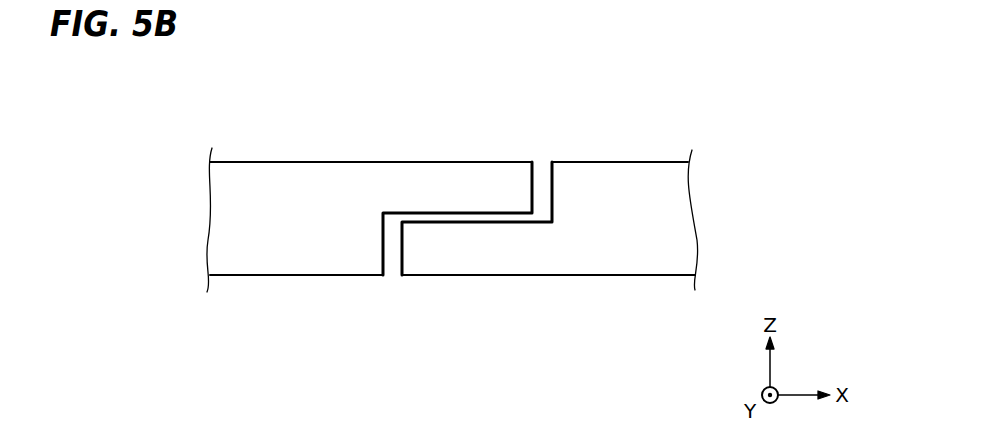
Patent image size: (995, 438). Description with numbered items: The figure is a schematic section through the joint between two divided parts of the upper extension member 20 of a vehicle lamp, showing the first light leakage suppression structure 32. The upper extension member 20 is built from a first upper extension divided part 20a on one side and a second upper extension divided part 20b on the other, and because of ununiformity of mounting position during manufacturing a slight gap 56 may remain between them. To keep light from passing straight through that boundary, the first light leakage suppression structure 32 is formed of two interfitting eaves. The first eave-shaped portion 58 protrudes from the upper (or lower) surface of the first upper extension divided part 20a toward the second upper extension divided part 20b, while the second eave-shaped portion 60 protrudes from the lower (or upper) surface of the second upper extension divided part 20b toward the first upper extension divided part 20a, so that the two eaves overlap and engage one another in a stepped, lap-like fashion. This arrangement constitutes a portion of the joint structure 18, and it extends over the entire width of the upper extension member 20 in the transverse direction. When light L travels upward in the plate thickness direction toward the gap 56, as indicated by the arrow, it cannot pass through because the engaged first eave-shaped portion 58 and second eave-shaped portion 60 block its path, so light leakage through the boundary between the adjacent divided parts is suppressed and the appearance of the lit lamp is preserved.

The joint structure 18 is at (432, 157).
The upper extension member 20 is at (233, 278).
The first upper extension divided part 20a is at (302, 188).
The second upper extension divided part 20b is at (642, 188).
The first light leakage suppression structure 32 is at (457, 96).
The gap 56 is at (393, 245).
The first eave-shaped portion 58 is at (505, 190).
The second eave-shaped portion 60 is at (457, 246).
The light L is at (392, 283).